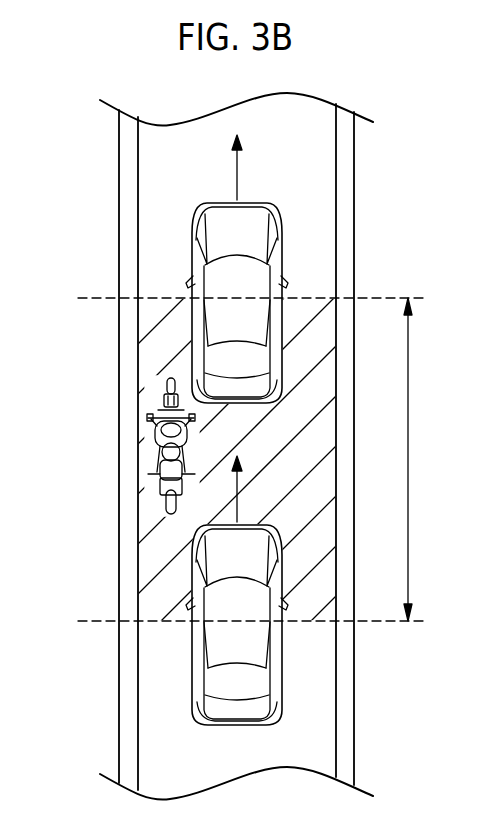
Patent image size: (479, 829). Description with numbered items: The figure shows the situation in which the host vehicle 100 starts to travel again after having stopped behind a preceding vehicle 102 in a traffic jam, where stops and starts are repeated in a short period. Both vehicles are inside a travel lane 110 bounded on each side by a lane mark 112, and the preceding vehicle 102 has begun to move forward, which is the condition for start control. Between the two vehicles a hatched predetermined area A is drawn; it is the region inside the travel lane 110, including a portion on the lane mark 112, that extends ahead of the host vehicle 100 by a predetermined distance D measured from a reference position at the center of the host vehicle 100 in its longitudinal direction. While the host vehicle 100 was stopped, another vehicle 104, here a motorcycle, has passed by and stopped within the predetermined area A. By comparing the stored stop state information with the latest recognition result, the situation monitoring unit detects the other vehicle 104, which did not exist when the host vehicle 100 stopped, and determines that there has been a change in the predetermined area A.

The host vehicle 100 is at (193, 690).
The preceding vehicle 102 is at (193, 243).
The other vehicle 104 is at (150, 453).
The travel lane 110 is at (300, 117).
The lane mark 112 is at (130, 166).
The predetermined area A is at (307, 303).
The predetermined distance D is at (414, 459).